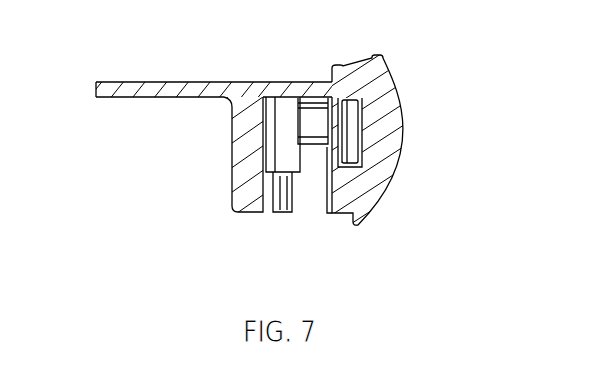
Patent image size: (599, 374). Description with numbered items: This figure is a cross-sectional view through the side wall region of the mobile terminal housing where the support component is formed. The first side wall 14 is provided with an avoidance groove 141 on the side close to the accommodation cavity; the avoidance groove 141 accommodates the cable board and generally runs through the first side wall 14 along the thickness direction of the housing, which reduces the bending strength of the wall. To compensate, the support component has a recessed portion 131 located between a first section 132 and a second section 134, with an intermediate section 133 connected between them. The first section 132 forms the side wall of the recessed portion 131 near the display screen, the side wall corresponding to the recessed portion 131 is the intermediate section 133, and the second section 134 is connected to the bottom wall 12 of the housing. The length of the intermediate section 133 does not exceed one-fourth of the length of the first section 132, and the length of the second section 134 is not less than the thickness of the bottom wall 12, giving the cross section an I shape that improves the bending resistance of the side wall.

The bottom wall 12 is at (132, 82).
The first side wall 14 is at (395, 143).
The recessed portion 131 is at (268, 130).
The first section 132 is at (248, 212).
The intermediate section 133 is at (240, 163).
The second section 134 is at (250, 105).
The avoidance groove 141 is at (350, 123).